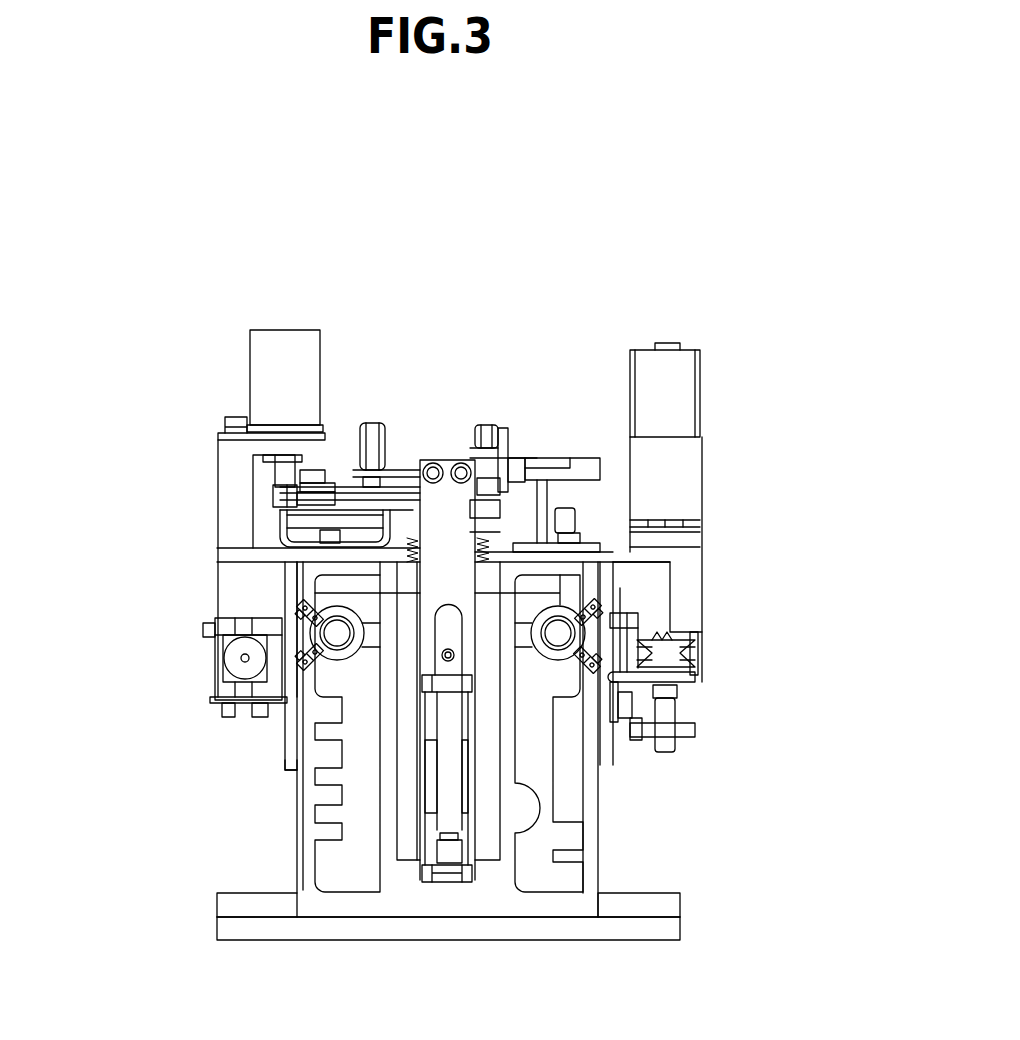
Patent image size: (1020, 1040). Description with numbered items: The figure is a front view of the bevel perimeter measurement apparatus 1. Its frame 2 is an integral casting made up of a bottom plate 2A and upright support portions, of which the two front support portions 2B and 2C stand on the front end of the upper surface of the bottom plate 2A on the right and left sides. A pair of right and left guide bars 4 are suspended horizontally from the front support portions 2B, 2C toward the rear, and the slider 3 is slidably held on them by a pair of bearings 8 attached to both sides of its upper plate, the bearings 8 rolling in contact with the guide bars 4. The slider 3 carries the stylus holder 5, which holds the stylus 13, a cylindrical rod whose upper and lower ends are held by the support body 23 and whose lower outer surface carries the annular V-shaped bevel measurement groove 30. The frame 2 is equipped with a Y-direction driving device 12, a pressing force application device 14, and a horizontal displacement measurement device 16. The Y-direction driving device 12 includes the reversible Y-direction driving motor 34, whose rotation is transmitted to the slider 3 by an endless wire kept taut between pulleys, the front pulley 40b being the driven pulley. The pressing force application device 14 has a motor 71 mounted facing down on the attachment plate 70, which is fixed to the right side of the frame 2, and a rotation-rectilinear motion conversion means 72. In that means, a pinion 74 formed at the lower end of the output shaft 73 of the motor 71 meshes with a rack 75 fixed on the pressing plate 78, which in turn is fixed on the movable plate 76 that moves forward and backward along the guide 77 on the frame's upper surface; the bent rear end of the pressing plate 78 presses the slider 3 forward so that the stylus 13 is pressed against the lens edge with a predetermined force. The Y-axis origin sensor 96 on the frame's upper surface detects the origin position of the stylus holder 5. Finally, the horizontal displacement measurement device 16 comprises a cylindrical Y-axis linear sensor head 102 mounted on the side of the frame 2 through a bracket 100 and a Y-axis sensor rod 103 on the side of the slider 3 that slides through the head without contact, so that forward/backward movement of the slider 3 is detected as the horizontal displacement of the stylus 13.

The bevel perimeter measurement apparatus 1 is at (768, 217).
The frame 2 is at (700, 900).
The bottom plate 2A is at (672, 930).
The support portion 2B is at (593, 877).
The support portion 2C is at (305, 872).
The slider 3 is at (600, 530).
The guide bars 4 is at (340, 645).
The stylus holder 5 is at (443, 458).
The bearings 8 is at (298, 608).
The Y-direction driving device 12 is at (726, 450).
The stylus 13 is at (443, 820).
The pressing force application device 14 is at (295, 312).
The horizontal displacement measurement device 16 is at (130, 738).
The support body 23 is at (452, 877).
The bevel measurement groove 30 is at (445, 840).
The Y-direction driving motor 34 is at (642, 350).
The front pulley 40b is at (685, 655).
The attachment plate 70 is at (218, 600).
The motor 71 is at (272, 372).
The rotation-rectilinear motion conversion means 72 is at (90, 448).
The output shaft 73 is at (283, 470).
The pinion 74 is at (280, 503).
The rack 75 is at (276, 490).
The movable plate 76 is at (362, 516).
The guide 77 is at (268, 527).
The pressing plate 78 is at (393, 480).
The Y-axis origin sensor 96 is at (585, 458).
The bracket 100 is at (295, 795).
The Y-axis linear sensor head 102 is at (222, 668).
The Y-axis sensor rod 103 is at (240, 660).